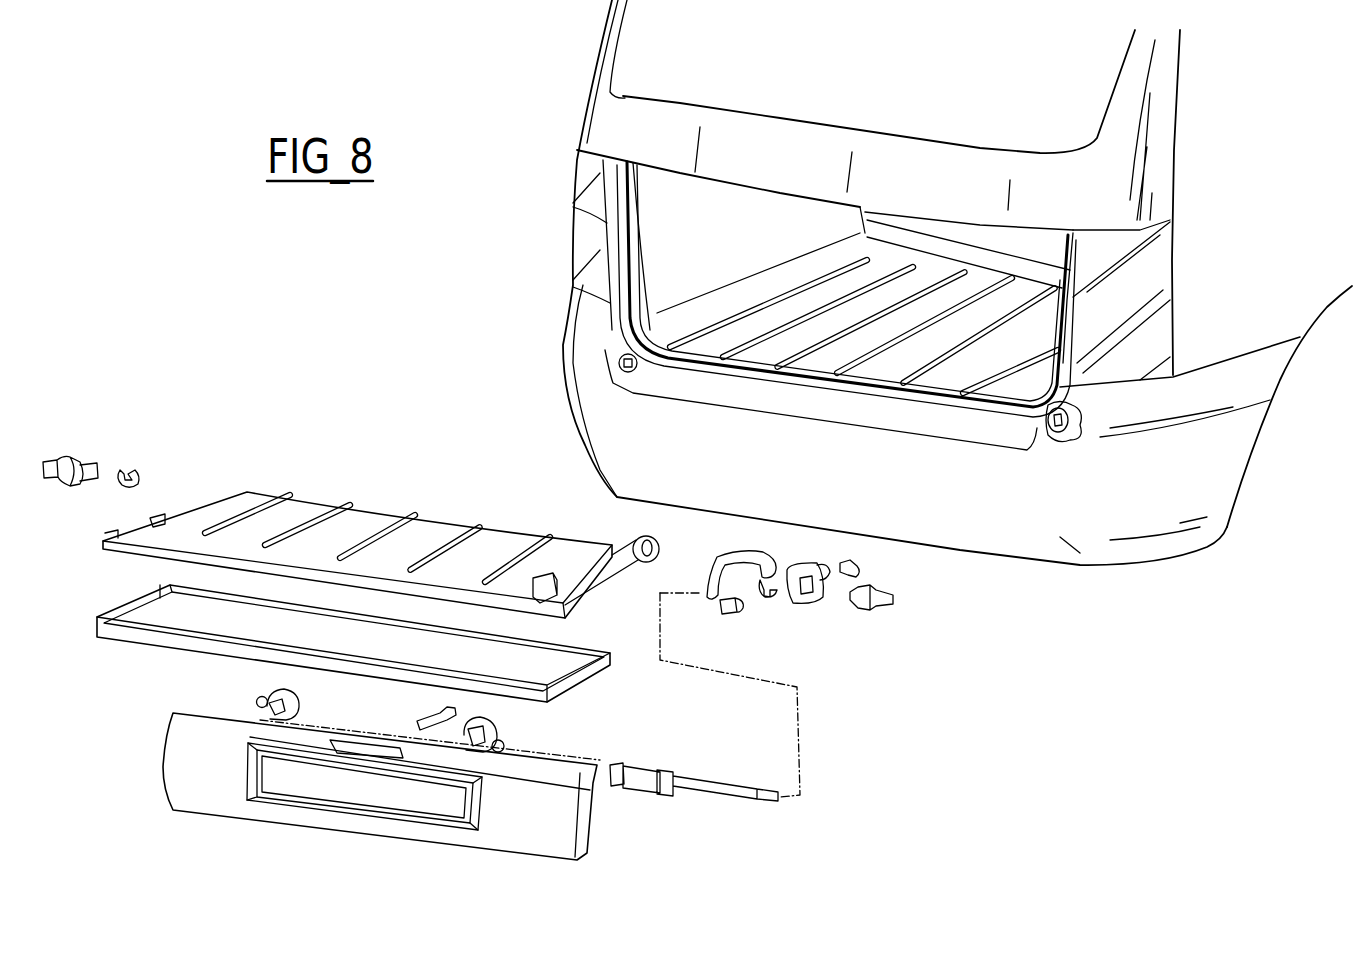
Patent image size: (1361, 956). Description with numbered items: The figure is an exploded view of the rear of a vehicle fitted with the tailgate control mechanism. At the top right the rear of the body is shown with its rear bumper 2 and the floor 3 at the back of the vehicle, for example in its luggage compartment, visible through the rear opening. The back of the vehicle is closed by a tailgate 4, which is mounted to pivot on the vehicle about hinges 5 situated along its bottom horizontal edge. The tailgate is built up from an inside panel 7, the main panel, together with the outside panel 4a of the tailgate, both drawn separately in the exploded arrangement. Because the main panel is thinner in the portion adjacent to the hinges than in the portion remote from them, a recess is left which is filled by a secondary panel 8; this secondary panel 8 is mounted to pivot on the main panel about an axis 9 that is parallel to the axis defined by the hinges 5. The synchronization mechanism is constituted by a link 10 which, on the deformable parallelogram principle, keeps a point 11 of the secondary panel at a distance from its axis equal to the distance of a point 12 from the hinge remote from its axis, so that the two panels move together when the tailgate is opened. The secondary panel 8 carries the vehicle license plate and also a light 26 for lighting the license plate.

The rear bumper 2 is at (1210, 488).
The floor 3 is at (817, 313).
The tailgate 4 is at (205, 455).
The outside panel 4a is at (172, 616).
The hinges 5 is at (1066, 455).
The inside panel 7 is at (613, 570).
The secondary panel 8 is at (550, 822).
The axis 9 is at (257, 707).
The link 10 is at (735, 561).
The point of the secondary panel 11 is at (510, 733).
The point remote from the hinge axis 12 is at (817, 592).
The light 26 is at (250, 737).